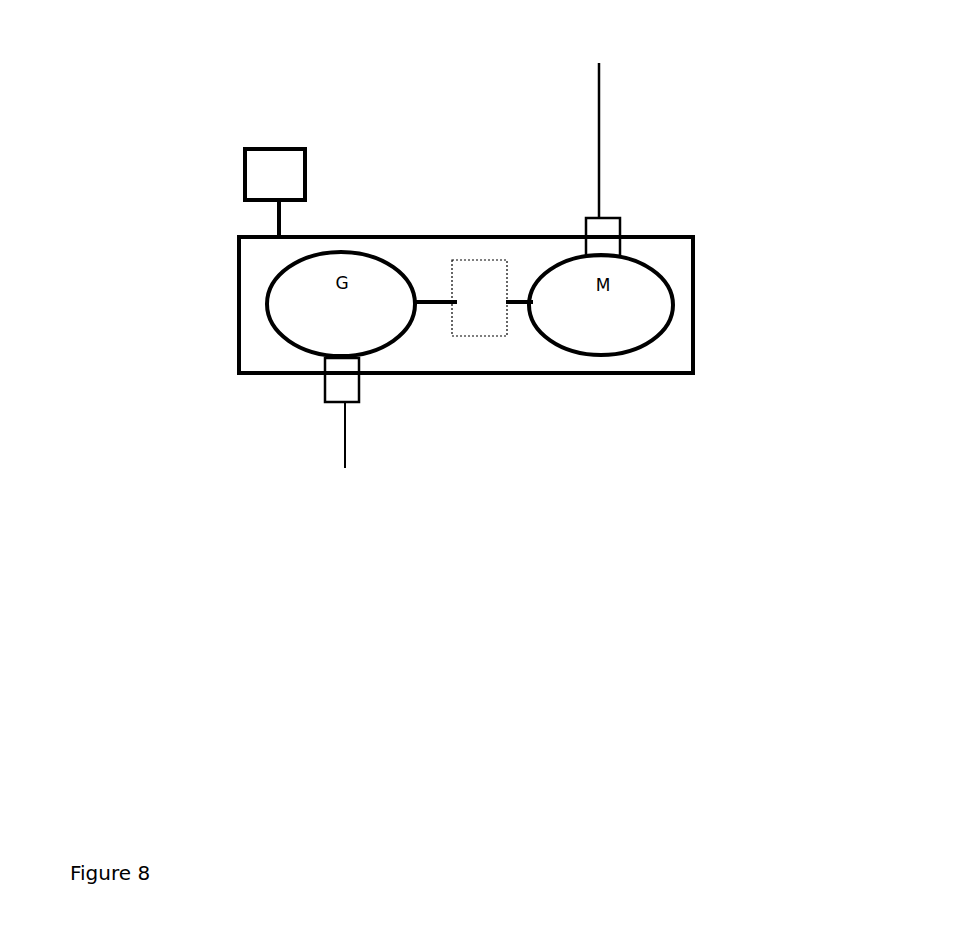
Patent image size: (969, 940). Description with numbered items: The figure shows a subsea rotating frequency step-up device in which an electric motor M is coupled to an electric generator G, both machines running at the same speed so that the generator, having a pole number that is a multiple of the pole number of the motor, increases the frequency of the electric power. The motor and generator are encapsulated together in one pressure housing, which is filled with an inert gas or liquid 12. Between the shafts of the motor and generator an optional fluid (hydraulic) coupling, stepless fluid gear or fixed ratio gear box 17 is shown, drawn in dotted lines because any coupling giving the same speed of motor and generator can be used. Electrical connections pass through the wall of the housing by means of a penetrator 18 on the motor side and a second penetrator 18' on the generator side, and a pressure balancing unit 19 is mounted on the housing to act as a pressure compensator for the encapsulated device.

The inert gas or liquid 12 is at (680, 349).
The fluid coupling, stepless fluid gear or fixed ratio gear box 17 is at (469, 273).
The penetrator 18 is at (629, 159).
The penetrator 18' is at (369, 413).
The pressure balancing unit 19 is at (266, 132).